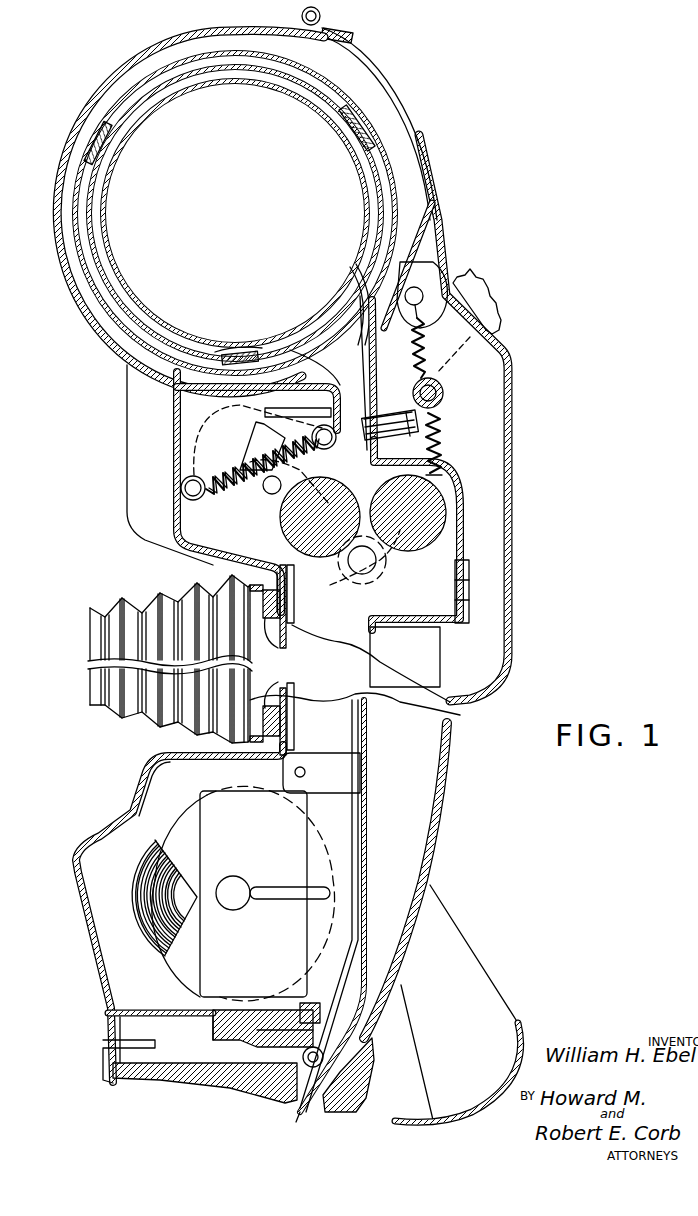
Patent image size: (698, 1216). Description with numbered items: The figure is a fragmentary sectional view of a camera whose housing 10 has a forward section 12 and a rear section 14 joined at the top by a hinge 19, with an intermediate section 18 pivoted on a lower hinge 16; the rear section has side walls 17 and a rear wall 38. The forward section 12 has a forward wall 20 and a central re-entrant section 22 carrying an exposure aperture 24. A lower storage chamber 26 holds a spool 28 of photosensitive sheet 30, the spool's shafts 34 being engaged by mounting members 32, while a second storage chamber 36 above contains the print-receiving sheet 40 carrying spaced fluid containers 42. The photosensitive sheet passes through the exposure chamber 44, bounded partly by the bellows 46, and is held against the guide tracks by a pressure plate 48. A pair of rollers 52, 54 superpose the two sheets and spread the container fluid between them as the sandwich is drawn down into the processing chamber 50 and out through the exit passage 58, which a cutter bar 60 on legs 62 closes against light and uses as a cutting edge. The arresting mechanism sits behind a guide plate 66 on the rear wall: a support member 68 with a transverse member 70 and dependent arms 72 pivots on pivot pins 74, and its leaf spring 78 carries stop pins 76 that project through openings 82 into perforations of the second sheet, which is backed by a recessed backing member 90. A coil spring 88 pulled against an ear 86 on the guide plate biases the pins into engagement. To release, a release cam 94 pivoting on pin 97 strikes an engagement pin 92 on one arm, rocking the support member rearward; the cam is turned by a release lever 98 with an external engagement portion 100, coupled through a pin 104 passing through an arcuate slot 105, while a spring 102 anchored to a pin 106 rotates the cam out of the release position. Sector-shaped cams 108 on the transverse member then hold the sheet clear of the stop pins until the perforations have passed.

The housing 10 is at (449, 830).
The forward section 12 is at (71, 873).
The rear section 14 is at (527, 635).
The hinge 16 is at (300, 1105).
The side walls 17 is at (231, 535).
The intermediate section 18 is at (354, 965).
The hinge 19 is at (321, 17).
The forward wall 20 is at (135, 458).
The central re-entrant section 22 is at (217, 560).
The exposure aperture 24 is at (272, 703).
The lower storage chamber 26 is at (113, 940).
The spool 28 is at (192, 848).
The photosensitive sheet 30 is at (160, 812).
The mounting members 32 is at (269, 946).
The shafts 34 is at (239, 882).
The second storage chamber 36 is at (347, 173).
The rear wall 38 is at (509, 501).
The print-receiving sheet 40 is at (397, 213).
The containers 42 is at (110, 140).
The exposure chamber 44 is at (279, 634).
The bellows 46 is at (153, 718).
The pressure plate 48 is at (289, 601).
The processing chamber 50 is at (414, 789).
The roller 52 is at (283, 523).
The roller 54 is at (403, 568).
The exit passage 58 is at (309, 1127).
The cutter bar 60 is at (446, 1124).
The legs 62 is at (463, 1024).
The guide plate 66 is at (292, 347).
The support member 68 is at (452, 343).
The transverse member 70 is at (362, 322).
The dependent arms 72 is at (404, 630).
The pivot pins 74 is at (346, 570).
The stop pins 76 is at (441, 421).
The leaf spring 78 is at (442, 440).
The openings 82 is at (360, 338).
The ear 86 is at (413, 280).
The coil spring 88 is at (443, 463).
The backing member 90 is at (226, 350).
The engagement pin 92 is at (448, 494).
The release cam 94 is at (256, 433).
The pivot pin 97 is at (265, 491).
The release lever 98 is at (259, 427).
The engagement portion 100 is at (471, 294).
The spring 102 is at (204, 482).
The pin 104 is at (313, 433).
The arcuate slot 105 is at (299, 547).
The pin 106 is at (190, 496).
The sector-shaped cams 108 is at (356, 278).